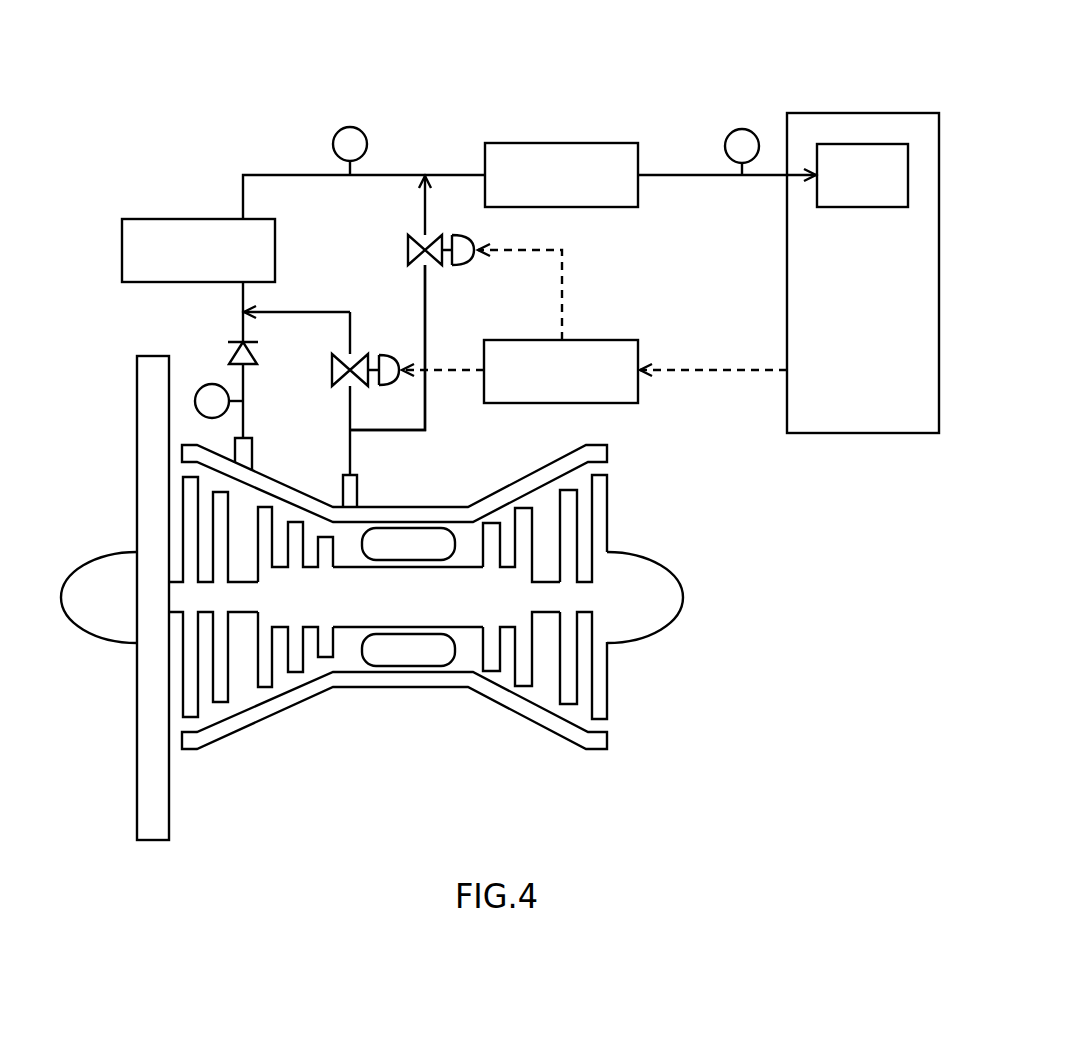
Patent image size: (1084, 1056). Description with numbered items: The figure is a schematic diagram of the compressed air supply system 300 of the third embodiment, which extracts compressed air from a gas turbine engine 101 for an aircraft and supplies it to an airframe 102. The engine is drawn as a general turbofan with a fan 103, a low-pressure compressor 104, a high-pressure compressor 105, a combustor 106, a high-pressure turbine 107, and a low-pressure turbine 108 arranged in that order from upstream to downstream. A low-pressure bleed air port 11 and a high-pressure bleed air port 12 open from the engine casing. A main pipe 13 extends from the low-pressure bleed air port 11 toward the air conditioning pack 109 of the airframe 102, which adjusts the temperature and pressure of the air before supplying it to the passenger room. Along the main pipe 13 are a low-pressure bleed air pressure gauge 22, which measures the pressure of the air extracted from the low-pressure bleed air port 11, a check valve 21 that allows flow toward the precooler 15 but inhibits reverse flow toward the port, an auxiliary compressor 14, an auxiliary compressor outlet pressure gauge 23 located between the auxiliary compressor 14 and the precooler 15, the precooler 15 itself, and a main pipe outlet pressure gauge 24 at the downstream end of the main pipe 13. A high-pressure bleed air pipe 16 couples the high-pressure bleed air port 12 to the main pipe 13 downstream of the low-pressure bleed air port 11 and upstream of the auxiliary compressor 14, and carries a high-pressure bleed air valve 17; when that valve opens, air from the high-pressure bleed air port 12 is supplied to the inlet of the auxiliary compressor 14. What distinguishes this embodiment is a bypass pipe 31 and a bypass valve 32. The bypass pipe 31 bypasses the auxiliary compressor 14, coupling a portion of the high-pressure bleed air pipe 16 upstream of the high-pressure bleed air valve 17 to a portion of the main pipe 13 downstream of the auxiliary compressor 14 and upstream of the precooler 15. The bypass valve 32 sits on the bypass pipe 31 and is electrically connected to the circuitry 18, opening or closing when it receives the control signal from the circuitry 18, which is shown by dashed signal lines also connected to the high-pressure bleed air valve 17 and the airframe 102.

The compressed air supply system 300 is at (491, 103).
The low-pressure bleed air port 11 is at (256, 450).
The high-pressure bleed air port 12 is at (360, 485).
The main pipe 13 is at (688, 175).
The auxiliary compressor 14 is at (122, 248).
The precooler 15 is at (570, 143).
The high-pressure bleed air pipe 16 is at (335, 312).
The high-pressure bleed air valve 17 is at (387, 354).
The circuitry 18 is at (610, 340).
The check valve 21 is at (258, 350).
The low-pressure bleed air pressure gauge 22 is at (212, 384).
The auxiliary compressor outlet pressure gauge 23 is at (350, 127).
The main pipe outlet pressure gauge 24 is at (742, 129).
The bypass pipe 31 is at (428, 432).
The bypass valve 32 is at (461, 266).
The gas turbine engine 101 is at (633, 707).
The airframe 102 is at (865, 113).
The fan 103 is at (137, 781).
The low-pressure compressor 104 is at (224, 704).
The high-pressure compressor 105 is at (298, 674).
The combustor 106 is at (407, 658).
The high-pressure turbine 107 is at (495, 669).
The low-pressure turbine 108 is at (571, 699).
The air conditioning pack 109 is at (882, 188).